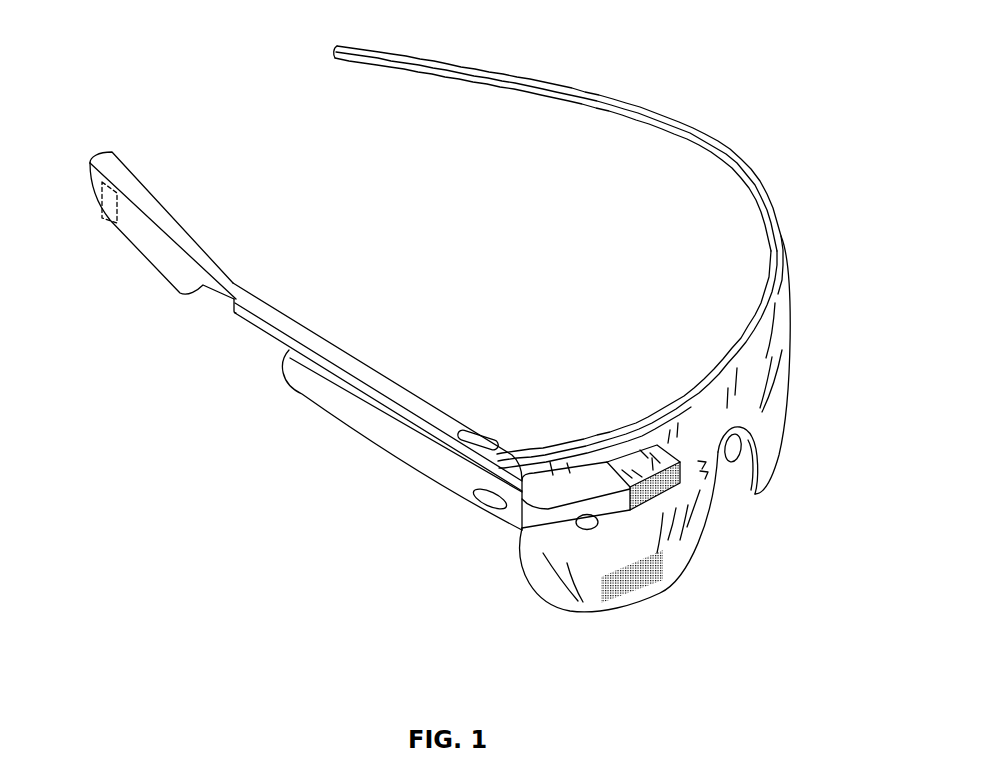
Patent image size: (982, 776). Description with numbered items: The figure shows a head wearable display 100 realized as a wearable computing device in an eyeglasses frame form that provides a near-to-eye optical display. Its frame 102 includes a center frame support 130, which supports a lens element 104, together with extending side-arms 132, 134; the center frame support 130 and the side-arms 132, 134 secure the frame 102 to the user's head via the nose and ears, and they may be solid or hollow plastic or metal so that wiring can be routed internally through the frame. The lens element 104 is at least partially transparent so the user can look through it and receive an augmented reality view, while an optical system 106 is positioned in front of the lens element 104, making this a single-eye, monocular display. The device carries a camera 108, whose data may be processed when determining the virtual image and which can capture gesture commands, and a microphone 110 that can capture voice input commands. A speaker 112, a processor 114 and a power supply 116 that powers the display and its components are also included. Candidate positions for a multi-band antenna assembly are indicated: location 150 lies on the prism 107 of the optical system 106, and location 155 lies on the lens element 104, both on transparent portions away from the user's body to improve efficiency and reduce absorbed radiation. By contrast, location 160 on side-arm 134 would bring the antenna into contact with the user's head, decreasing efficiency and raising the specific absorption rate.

The head wearable display 100 is at (440, 358).
The frame 102 is at (558, 257).
The lens element 104 is at (640, 453).
The optical system 106 is at (583, 453).
The prism 107 is at (658, 444).
The camera 108 is at (583, 531).
The microphone 110 is at (490, 502).
The speaker 112 is at (378, 440).
The processor 114 is at (163, 237).
The power supply 116 is at (163, 237).
The center frame support 130 is at (772, 268).
The side-arm 132 is at (553, 88).
The side-arm 134 is at (263, 312).
The location 150 is at (638, 414).
The location 155 is at (633, 575).
The location 160 is at (116, 193).